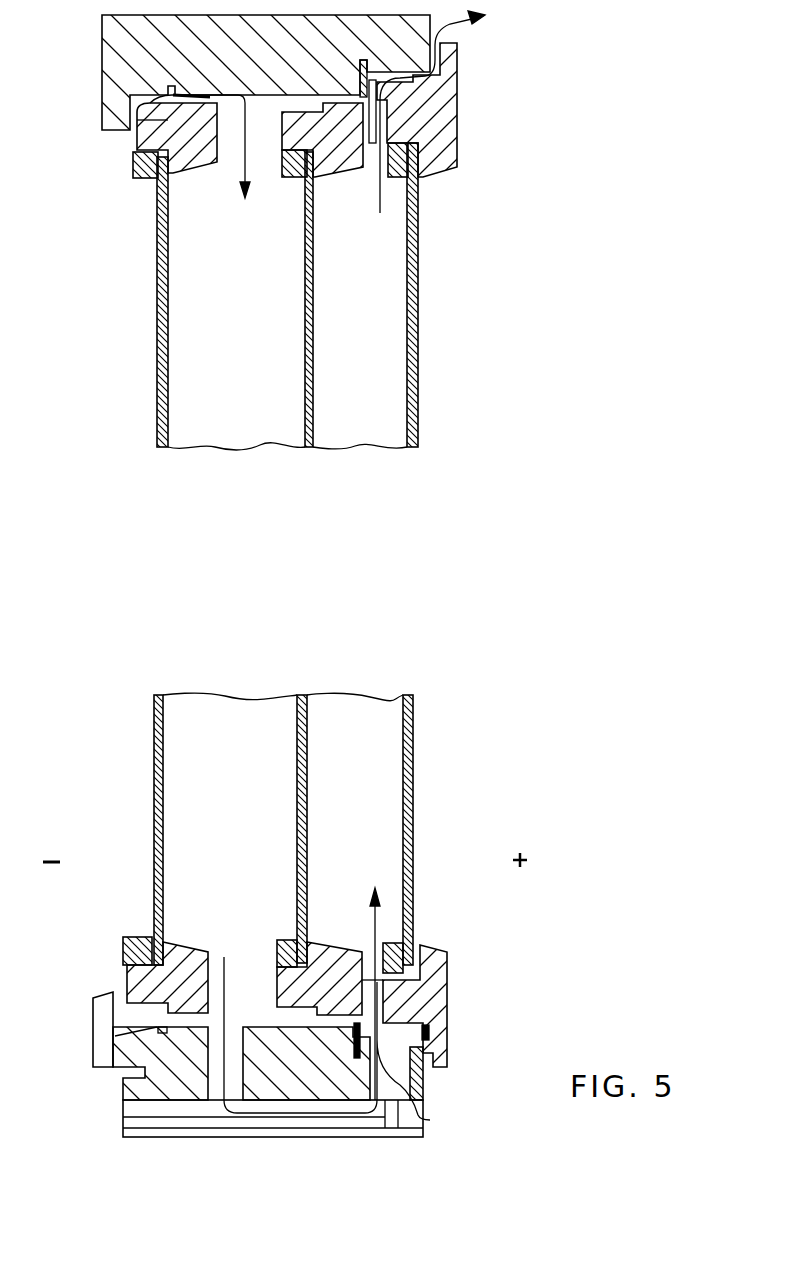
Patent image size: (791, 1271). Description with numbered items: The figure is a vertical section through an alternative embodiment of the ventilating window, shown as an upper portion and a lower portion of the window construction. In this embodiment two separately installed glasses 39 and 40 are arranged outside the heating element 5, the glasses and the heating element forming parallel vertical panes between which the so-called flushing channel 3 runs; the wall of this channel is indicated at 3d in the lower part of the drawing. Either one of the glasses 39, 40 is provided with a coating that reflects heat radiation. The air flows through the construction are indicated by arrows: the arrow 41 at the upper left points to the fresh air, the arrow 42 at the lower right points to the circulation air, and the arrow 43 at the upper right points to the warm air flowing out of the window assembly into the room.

The flushing channel 3 is at (398, 800).
The tube wall 3d is at (183, 755).
The heating element 5 is at (418, 392).
The glass 39 is at (306, 318).
The glass 40 is at (160, 308).
The arrow 41 is at (137, 118).
The arrow 42 is at (422, 1120).
The arrow 43 is at (487, 27).